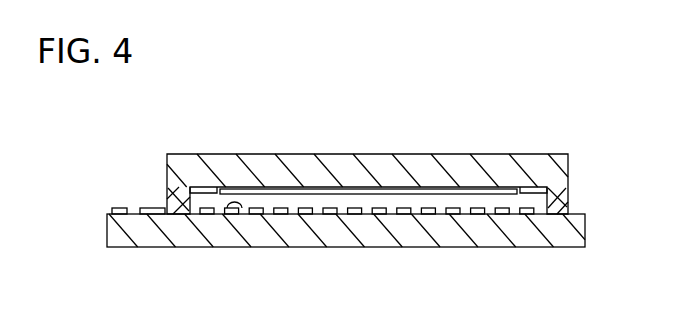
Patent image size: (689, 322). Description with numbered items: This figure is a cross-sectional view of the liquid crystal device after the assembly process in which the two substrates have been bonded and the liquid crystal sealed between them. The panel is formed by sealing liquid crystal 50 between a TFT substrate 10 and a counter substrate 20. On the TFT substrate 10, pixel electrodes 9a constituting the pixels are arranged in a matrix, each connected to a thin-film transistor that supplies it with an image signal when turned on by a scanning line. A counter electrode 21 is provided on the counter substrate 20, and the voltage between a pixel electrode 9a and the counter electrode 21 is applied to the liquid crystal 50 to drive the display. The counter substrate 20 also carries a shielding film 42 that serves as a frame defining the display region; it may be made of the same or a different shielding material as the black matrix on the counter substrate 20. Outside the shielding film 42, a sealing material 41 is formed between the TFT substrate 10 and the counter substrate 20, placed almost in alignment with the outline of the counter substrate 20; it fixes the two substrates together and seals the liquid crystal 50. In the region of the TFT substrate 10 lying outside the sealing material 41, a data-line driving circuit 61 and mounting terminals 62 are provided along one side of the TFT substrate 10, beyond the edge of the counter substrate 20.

The TFT substrate 10 is at (419, 235).
The counter substrate 20 is at (375, 165).
The counter electrode 21 is at (300, 193).
The sealing material 41 is at (177, 205).
The shielding film 42 is at (200, 190).
The liquid crystal 50 is at (345, 203).
The pixel electrode 9a is at (238, 205).
The data-line driving circuit 61 is at (148, 210).
The mounting terminals 62 is at (117, 210).